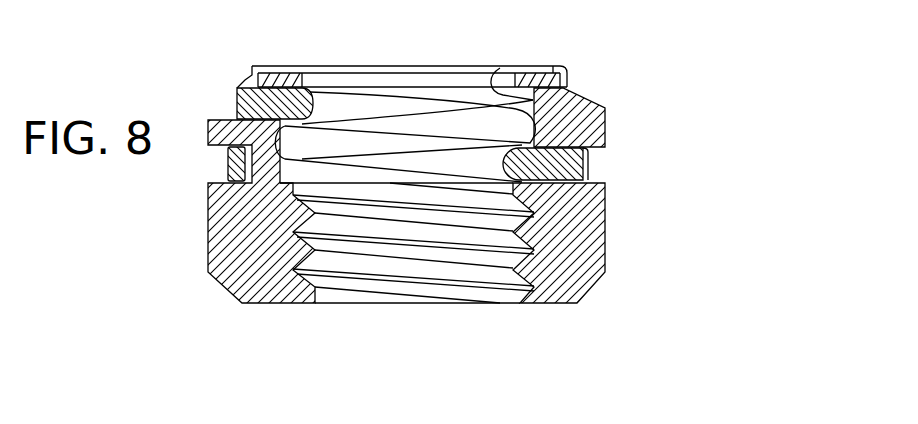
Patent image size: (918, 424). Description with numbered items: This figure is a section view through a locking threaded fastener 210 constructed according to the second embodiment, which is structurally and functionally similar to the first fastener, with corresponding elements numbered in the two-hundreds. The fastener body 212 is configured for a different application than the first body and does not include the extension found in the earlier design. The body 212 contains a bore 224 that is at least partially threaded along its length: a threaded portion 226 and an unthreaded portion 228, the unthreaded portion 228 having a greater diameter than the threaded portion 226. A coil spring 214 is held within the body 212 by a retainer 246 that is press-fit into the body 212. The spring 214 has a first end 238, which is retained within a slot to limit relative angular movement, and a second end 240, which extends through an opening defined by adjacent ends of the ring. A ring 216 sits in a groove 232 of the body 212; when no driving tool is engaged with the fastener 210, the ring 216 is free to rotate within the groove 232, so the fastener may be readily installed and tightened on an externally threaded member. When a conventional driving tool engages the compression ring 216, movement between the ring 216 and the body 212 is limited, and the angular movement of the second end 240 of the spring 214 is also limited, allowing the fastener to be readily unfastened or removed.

The locking threaded fastener 210 is at (692, 66).
The fastener body 212 is at (620, 108).
The coil spring 214 is at (366, 96).
The ring 216 is at (214, 167).
The bore 224 is at (376, 312).
The threaded portion 226 is at (470, 268).
The unthreaded portion 228 is at (498, 68).
The groove 232 is at (600, 162).
The first end of the spring 238 is at (231, 92).
The second end of the spring 240 is at (576, 178).
The retainer 246 is at (432, 96).